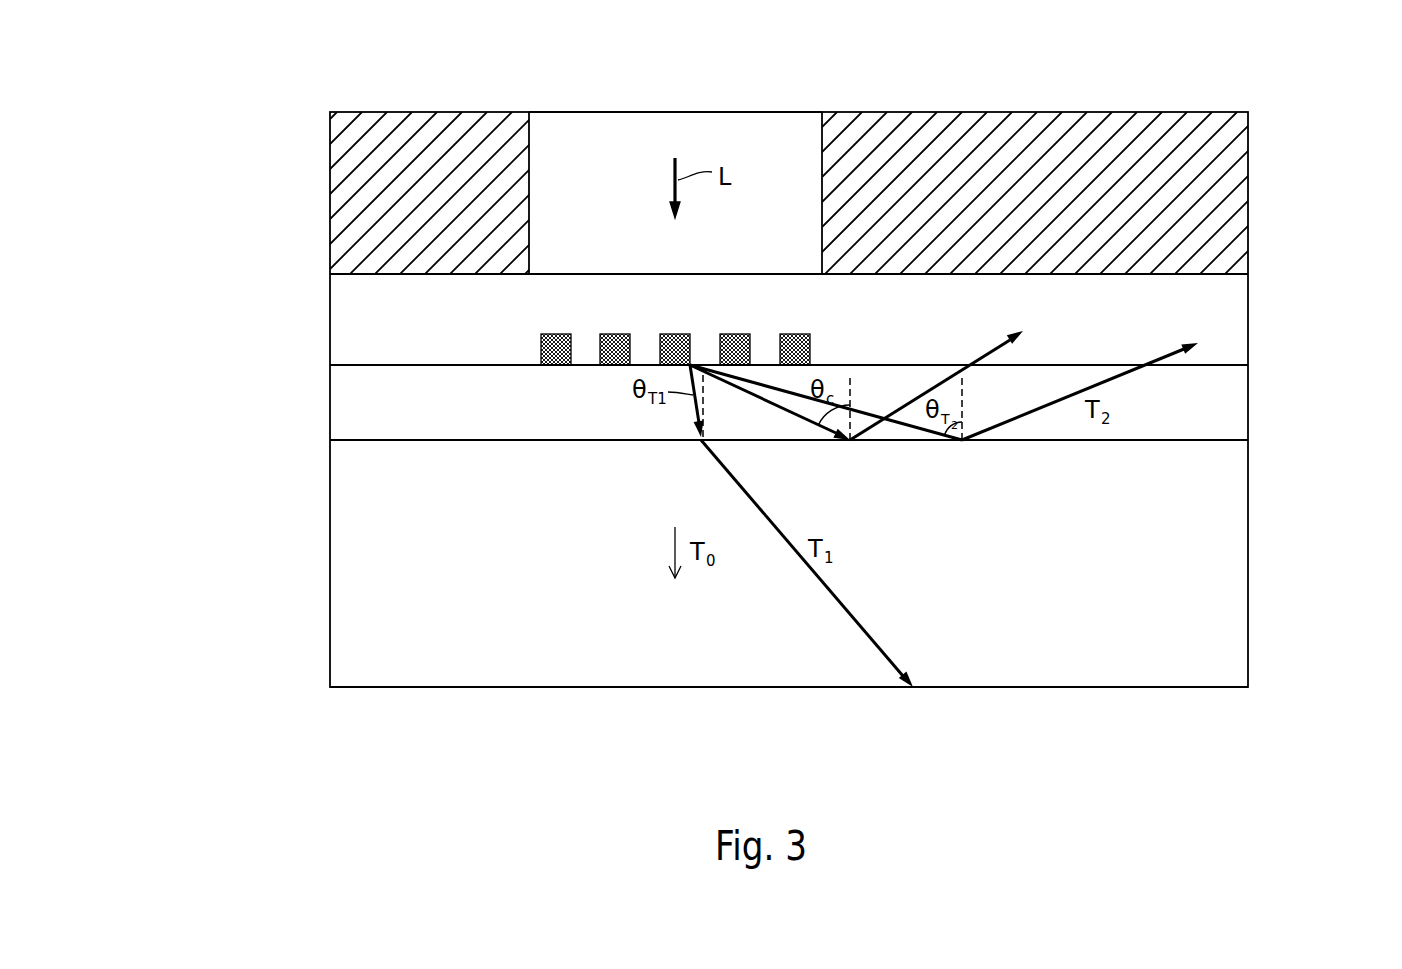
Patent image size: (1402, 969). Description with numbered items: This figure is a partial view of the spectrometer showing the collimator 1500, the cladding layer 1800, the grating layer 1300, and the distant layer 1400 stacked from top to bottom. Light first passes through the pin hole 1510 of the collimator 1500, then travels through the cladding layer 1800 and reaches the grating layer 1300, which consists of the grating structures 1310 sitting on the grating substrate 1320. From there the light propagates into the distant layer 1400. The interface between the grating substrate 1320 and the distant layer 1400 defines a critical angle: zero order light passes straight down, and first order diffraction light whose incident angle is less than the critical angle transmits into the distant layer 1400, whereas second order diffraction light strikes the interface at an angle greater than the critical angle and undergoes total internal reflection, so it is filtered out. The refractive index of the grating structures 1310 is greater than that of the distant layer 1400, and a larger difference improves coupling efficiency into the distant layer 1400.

The grating layer 1300 is at (190, 272).
The grating structures 1310 is at (517, 320).
The grating substrate 1320 is at (1248, 404).
The distant layer 1400 is at (1248, 563).
The collimator 1500 is at (1248, 190).
The pin hole 1510 is at (671, 96).
The cladding layer 1800 is at (1248, 325).